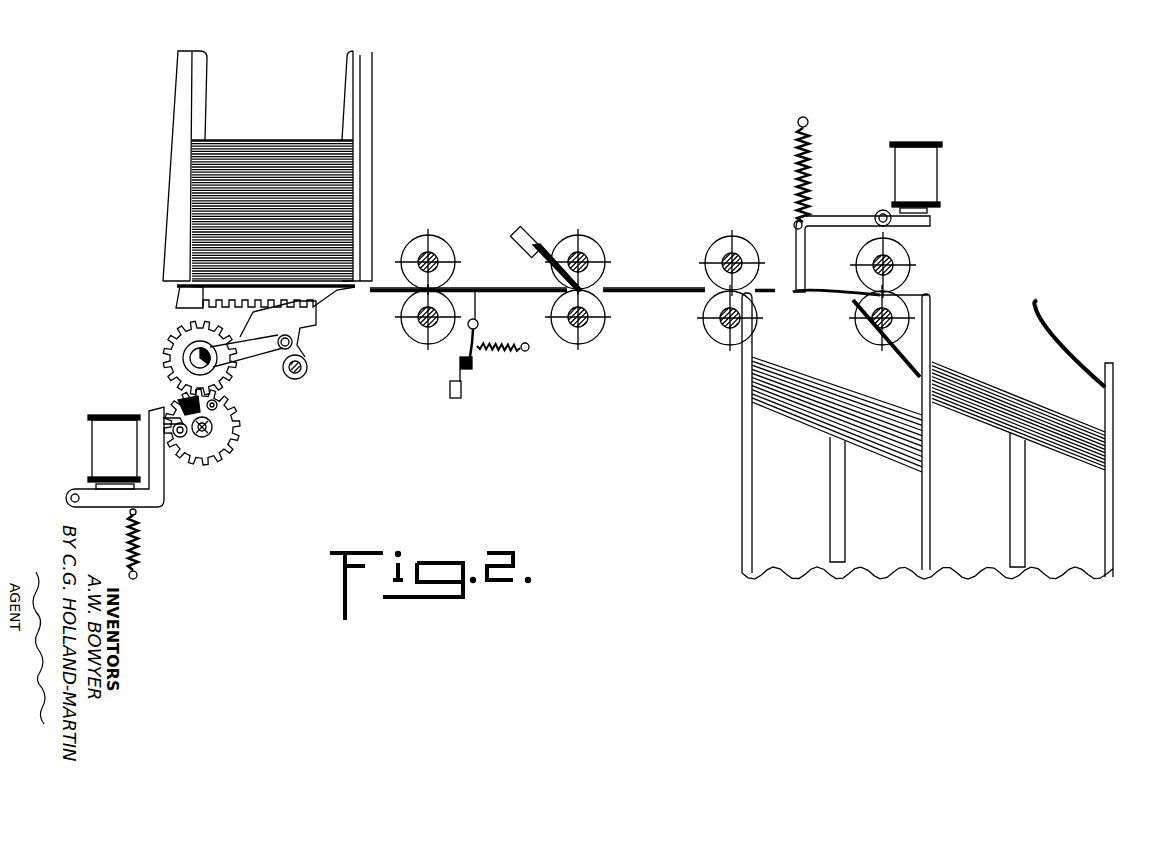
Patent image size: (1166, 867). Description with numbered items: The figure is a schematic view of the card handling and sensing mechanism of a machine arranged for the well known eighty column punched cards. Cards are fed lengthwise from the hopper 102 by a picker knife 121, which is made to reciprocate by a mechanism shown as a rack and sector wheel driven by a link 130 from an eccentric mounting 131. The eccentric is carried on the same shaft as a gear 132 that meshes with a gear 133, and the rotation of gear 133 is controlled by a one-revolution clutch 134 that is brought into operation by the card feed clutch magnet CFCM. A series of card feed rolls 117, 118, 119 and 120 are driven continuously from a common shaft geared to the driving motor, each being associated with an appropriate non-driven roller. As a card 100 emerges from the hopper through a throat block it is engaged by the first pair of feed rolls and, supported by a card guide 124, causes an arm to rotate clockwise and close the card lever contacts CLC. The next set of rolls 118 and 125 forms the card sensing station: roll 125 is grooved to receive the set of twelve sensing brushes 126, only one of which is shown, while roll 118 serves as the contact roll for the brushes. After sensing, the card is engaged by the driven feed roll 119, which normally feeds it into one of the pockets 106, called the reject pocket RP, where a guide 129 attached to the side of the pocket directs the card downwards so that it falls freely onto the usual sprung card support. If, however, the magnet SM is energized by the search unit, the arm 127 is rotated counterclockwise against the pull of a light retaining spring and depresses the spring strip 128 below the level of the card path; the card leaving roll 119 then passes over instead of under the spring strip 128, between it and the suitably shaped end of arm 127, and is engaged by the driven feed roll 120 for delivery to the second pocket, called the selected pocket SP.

The card 100 is at (190, 228).
The hopper 102 is at (192, 85).
The pockets 106 is at (753, 443).
The card feed roll 117 is at (402, 317).
The card feed roll 118 is at (587, 335).
The card feed roll 119 is at (723, 337).
The card feed roll 120 is at (873, 347).
The picker knife 121 is at (183, 317).
The card guide 124 is at (540, 293).
The roll 125 is at (595, 256).
The sensing brushes 126 is at (560, 235).
The arm 127 is at (807, 250).
The spring strip 128 is at (823, 289).
The guide 129 is at (853, 301).
The link 130 is at (300, 351).
The eccentric mounting 131 is at (180, 377).
The gear 132 is at (168, 360).
The gear 133 is at (237, 434).
The one-revolution clutch 134 is at (180, 407).
The card feed clutch magnet CFCM is at (102, 452).
The card lever contacts CLC is at (489, 360).
The magnet SM is at (930, 166).
The reject pocket RP is at (757, 500).
The selected pocket SP is at (1090, 416).